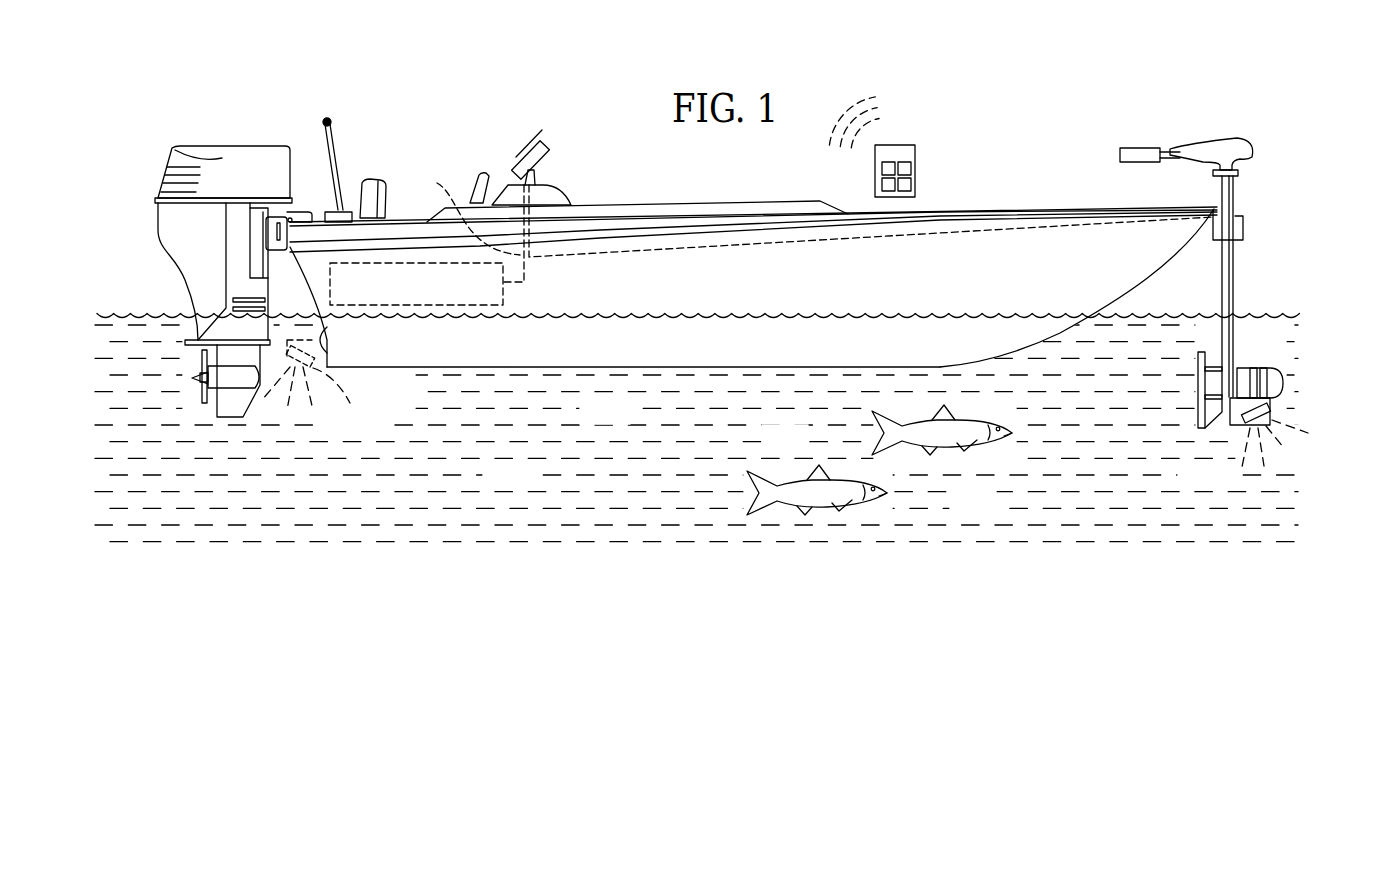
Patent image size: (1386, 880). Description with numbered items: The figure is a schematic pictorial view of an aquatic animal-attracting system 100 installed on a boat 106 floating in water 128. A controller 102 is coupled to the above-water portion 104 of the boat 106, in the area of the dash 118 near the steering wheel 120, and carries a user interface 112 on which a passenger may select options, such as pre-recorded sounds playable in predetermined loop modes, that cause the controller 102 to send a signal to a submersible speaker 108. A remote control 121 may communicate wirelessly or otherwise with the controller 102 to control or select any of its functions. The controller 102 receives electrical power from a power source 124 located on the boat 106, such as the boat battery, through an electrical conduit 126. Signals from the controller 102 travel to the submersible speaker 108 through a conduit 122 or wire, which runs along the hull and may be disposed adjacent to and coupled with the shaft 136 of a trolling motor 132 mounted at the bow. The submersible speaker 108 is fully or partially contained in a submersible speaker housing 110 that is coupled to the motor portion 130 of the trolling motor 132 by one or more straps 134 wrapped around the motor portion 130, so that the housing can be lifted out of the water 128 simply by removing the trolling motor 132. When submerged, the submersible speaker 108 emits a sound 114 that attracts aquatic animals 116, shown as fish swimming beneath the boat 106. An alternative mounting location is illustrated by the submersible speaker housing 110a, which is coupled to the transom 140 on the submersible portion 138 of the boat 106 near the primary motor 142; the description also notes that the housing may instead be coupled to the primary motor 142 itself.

The aquatic animal-attracting system 100 is at (1034, 75).
The controller 102 is at (557, 157).
The above-water portion 104 is at (1020, 210).
The boat 106 is at (722, 200).
The submersible speaker 108 is at (1272, 405).
The submersible speaker housing 110 is at (1247, 425).
The submersible speaker housing 110a is at (319, 390).
The user interface 112 is at (528, 141).
The sound 114 is at (1290, 448).
The aquatic animals 116 is at (797, 480).
The dash 118 is at (563, 193).
The steering wheel 120 is at (478, 172).
The remote control 121 is at (917, 173).
The conduit 122 is at (948, 237).
The power source 124 is at (503, 293).
The electrical conduit 126 is at (456, 210).
The water 128 is at (525, 491).
The motor portion 130 is at (1283, 372).
The trolling motor 132 is at (1236, 137).
The straps 134 is at (1253, 367).
The shaft 136 is at (1222, 260).
The submersible portion 138 is at (605, 369).
The transom 140 is at (330, 353).
The primary motor 142 is at (193, 330).